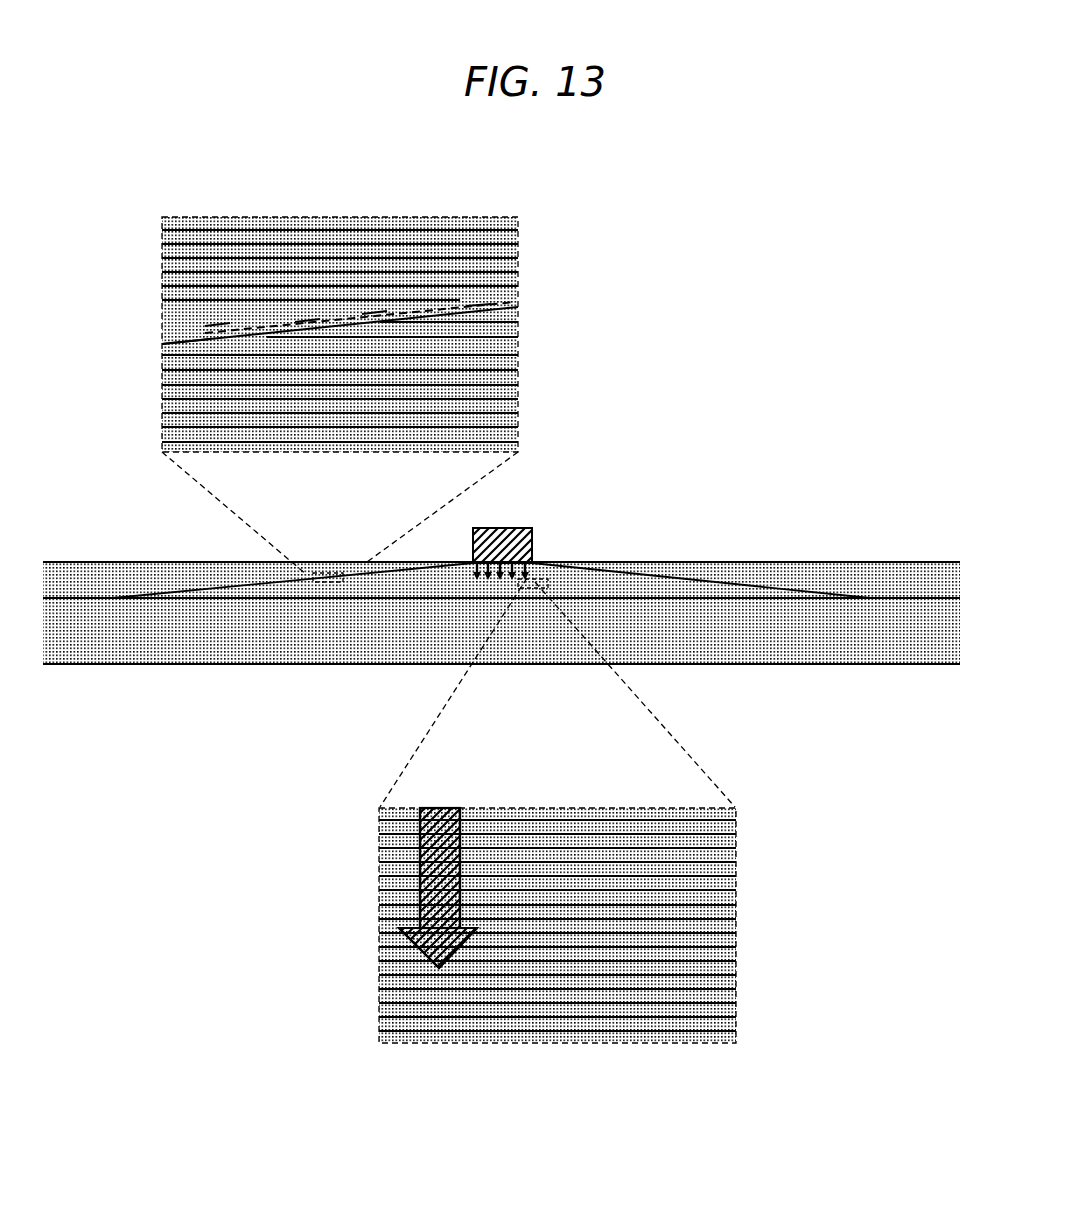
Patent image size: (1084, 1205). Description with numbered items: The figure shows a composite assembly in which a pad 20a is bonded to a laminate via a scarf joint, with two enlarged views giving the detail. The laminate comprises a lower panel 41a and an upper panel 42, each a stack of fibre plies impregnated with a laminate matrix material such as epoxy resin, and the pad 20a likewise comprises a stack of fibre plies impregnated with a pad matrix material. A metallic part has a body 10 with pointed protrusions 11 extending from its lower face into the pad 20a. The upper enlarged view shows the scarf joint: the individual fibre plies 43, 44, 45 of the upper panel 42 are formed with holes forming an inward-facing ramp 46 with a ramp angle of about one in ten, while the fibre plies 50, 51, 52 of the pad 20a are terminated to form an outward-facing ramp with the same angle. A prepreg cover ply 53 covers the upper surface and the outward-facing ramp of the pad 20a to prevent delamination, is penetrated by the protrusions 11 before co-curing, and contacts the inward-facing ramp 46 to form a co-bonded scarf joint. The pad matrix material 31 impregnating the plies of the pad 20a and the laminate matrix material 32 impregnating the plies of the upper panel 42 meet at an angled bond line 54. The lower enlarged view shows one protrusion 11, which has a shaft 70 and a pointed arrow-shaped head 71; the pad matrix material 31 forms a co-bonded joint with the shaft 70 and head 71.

The body 10 is at (534, 544).
The pointed protrusions 11 is at (395, 898).
The pad 20a is at (334, 455).
The pad matrix material 31 is at (519, 390).
The laminate matrix material 32 is at (519, 237).
The lower panel 41a is at (213, 645).
The upper panel 42 is at (388, 214).
The fibre ply 43 is at (374, 297).
The fibre ply 44 is at (307, 320).
The fibre ply 45 is at (217, 323).
The inward-facing ramp 46 is at (291, 563).
The fibre ply 50 is at (505, 317).
The fibre ply 51 is at (519, 323).
The fibre ply 52 is at (519, 338).
The cover ply 53 is at (188, 342).
The angled bond line 54 is at (478, 304).
The shaft 70 is at (428, 863).
The head 71 is at (418, 950).